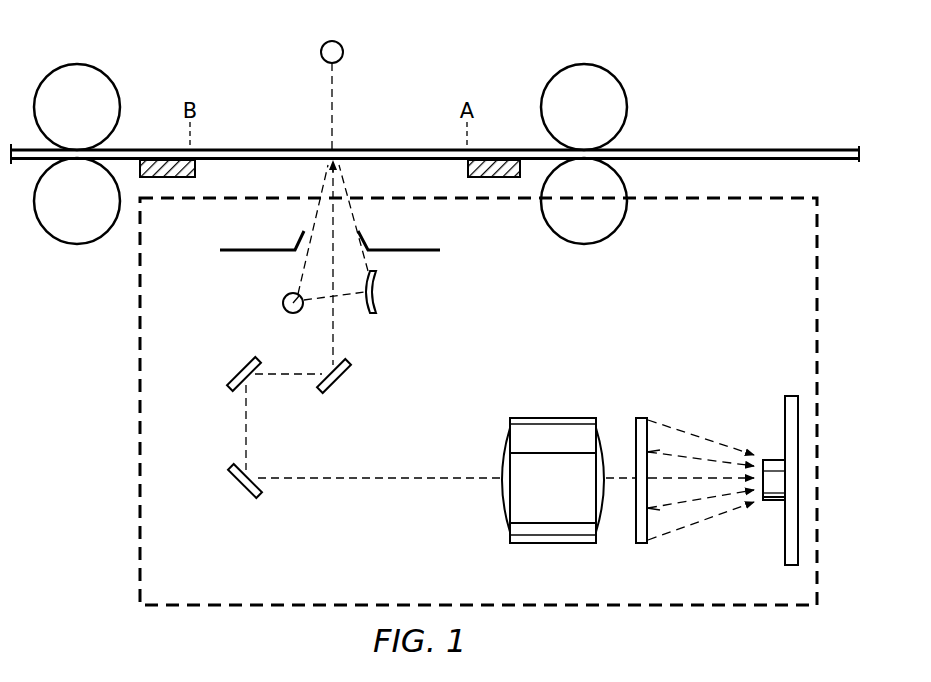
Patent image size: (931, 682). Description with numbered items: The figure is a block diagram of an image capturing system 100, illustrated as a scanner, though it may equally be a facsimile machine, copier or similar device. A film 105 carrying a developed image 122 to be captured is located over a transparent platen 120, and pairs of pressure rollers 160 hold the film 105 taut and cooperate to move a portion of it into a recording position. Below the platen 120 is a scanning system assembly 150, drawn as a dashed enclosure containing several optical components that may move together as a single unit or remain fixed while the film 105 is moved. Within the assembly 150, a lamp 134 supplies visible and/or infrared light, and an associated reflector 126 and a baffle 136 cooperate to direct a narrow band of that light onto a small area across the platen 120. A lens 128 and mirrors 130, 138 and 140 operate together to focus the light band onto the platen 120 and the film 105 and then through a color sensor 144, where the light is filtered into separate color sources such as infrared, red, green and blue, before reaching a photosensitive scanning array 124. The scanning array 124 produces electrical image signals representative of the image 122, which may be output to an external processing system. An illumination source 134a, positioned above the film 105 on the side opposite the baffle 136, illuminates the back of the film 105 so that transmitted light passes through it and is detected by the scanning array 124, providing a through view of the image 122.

The image capturing system 100 is at (86, 588).
The film 105 is at (785, 136).
The transparent platen 120 is at (280, 149).
The developed image 122 is at (356, 149).
The photosensitive scanning array 124 is at (772, 506).
The reflector 126 is at (384, 303).
The lens 128 is at (550, 548).
The mirror 130 is at (237, 365).
The lamp 134 is at (283, 303).
The illumination source 134a is at (321, 52).
The baffle 136 is at (430, 252).
The mirror 138 is at (345, 386).
The mirror 140 is at (233, 492).
The color sensor 144 is at (645, 548).
The scanning system assembly 150 is at (138, 403).
The pressure rollers 160 is at (107, 62).